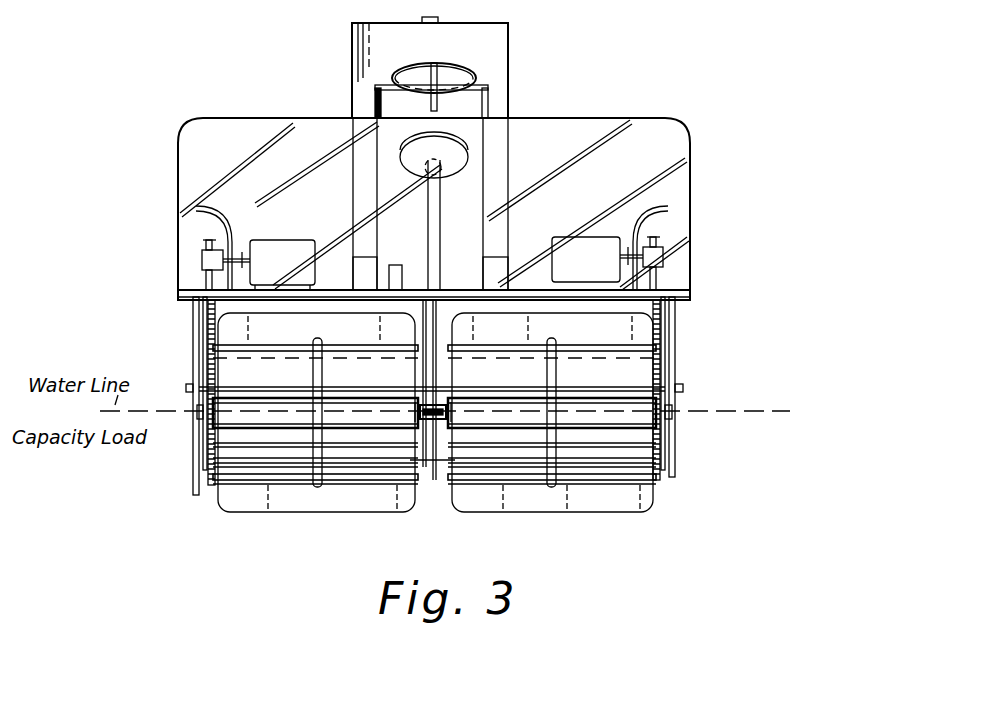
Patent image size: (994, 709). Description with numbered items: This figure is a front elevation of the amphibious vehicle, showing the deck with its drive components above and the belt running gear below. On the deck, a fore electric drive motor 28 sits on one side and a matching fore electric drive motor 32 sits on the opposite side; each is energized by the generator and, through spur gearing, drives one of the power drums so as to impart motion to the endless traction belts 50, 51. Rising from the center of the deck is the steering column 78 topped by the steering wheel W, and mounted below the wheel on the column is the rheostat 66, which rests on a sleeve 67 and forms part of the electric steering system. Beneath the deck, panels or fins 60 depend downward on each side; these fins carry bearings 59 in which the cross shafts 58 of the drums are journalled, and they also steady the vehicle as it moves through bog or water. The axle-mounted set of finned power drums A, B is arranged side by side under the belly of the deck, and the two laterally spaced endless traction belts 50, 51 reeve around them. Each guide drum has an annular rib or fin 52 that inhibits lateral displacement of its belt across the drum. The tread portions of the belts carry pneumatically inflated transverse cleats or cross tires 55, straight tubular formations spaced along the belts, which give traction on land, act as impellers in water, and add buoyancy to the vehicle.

The steering wheel W is at (444, 66).
The steering column 78 is at (431, 138).
The rheostat 66 is at (442, 162).
The sleeve 67 is at (438, 250).
The electric drive motor 28 is at (284, 247).
The electric drive motor 32 is at (583, 247).
The panels or fins 60 is at (398, 265).
The bearings 59 is at (668, 408).
The cross shafts 58 is at (418, 405).
The pneumatically inflated transverse cleats 55 is at (250, 335).
The annular rib or fin 52 is at (327, 455).
The endless traction belt 50 is at (383, 468).
The endless traction belt 51 is at (500, 475).
The power drum A is at (215, 452).
The power drum B is at (642, 455).